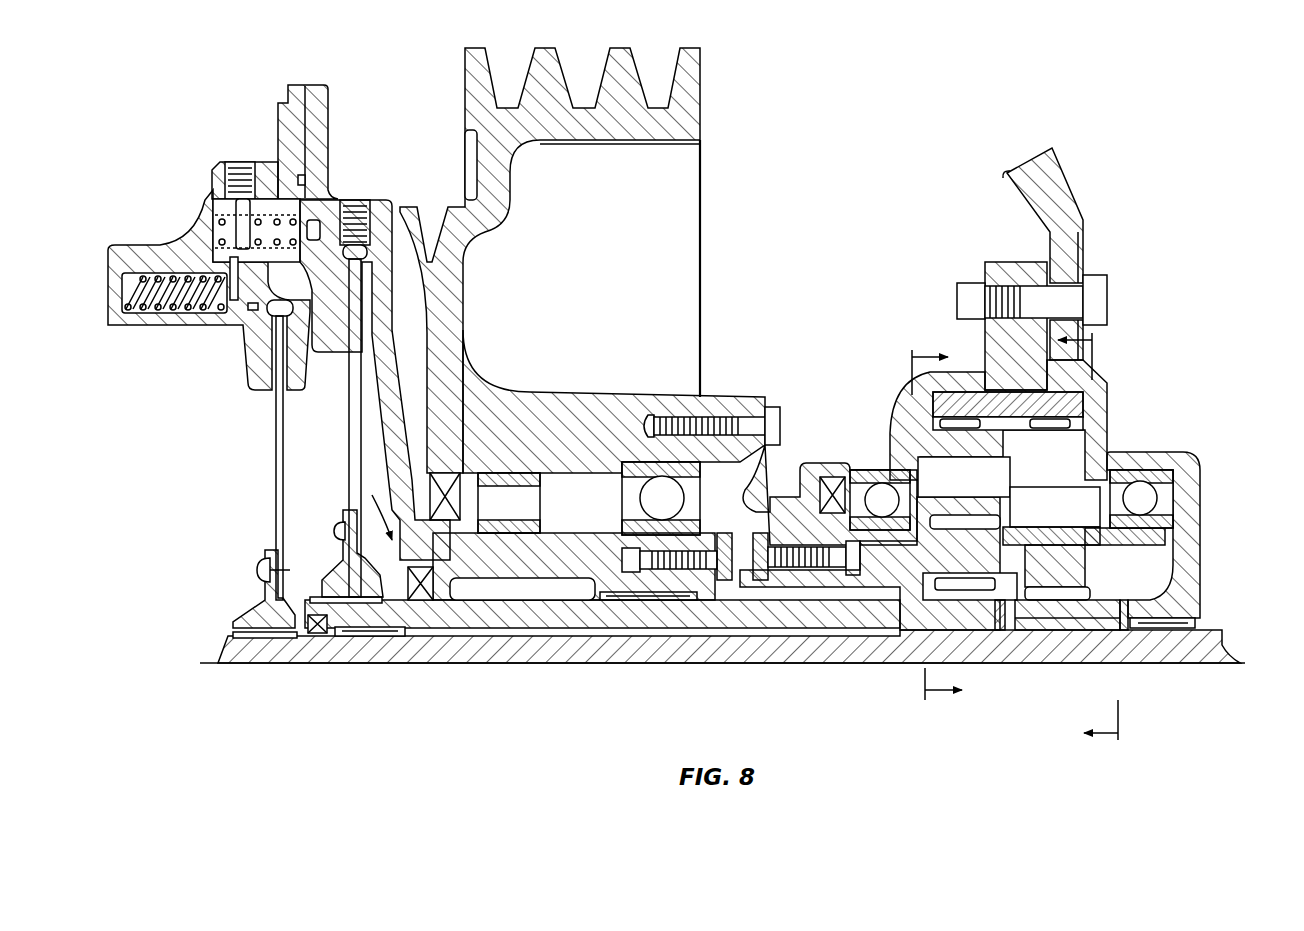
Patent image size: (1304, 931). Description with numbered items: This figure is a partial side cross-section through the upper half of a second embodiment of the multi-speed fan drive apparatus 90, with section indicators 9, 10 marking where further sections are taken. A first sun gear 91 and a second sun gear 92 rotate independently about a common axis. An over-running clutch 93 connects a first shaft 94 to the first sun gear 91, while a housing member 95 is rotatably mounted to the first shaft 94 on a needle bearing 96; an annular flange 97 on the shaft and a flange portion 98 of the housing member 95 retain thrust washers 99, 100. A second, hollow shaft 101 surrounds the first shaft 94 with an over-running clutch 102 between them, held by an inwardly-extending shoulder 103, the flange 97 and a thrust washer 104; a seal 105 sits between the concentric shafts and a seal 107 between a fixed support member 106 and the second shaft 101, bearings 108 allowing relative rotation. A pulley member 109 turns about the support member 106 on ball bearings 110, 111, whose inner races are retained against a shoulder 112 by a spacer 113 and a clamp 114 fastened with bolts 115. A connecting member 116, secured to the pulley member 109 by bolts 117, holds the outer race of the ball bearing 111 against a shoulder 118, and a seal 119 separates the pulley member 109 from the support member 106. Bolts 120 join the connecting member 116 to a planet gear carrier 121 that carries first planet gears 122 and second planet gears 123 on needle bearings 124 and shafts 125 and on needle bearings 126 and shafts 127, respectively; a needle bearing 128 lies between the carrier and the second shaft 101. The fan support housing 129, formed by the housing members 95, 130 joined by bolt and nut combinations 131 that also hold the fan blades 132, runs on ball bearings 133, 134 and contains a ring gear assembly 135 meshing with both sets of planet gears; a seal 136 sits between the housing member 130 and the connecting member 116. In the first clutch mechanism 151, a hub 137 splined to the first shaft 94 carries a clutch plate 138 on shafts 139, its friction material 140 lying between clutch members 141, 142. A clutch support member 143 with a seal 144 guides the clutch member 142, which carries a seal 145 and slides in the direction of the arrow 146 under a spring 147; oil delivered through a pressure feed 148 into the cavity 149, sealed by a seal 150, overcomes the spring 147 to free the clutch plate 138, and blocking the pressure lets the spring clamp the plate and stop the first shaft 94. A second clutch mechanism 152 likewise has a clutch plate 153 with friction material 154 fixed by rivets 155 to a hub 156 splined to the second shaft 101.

The multi-speed fan drive apparatus 90 is at (798, 262).
The first sun gear 91 is at (1048, 614).
The second sun gear 92 is at (950, 550).
The over-running clutch 93 is at (1060, 634).
The first shaft 94 is at (1145, 640).
The housing member 95 is at (1185, 468).
The needle bearing 96 is at (1180, 630).
The annular flange 97 is at (995, 613).
The flange portion 98 is at (1160, 608).
The thrust washer 99 is at (1040, 640).
The thrust washer 100 is at (1075, 614).
The second hollow shaft 101 is at (565, 618).
The over-running clutch 102 is at (975, 633).
The inwardly-extending shoulder 103 is at (900, 604).
The thrust washer 104 is at (993, 628).
The seal 105 is at (320, 637).
The support member 106 is at (535, 565).
The seal 107 is at (420, 592).
The bearings 108 is at (365, 634).
The pulley member 109 is at (690, 122).
The ball bearing 110 is at (512, 495).
The ball bearing 111 is at (658, 492).
The shoulder 112 is at (574, 566).
The spacer 113 is at (577, 545).
The clamp 114 is at (703, 590).
The bolts 115 is at (760, 590).
The connecting member 116 is at (770, 490).
The bolts 117 is at (776, 420).
The shoulder 118 is at (616, 466).
The seal 119 is at (445, 490).
The bolts 120 is at (766, 582).
The planet gear carrier 121 is at (868, 596).
The first planet gears 122 is at (1075, 455).
The second planet gears 123 is at (918, 440).
The needle bearings 124 is at (1085, 470).
The shafts 125 is at (1075, 500).
The needle bearings 126 is at (1008, 396).
The shafts 127 is at (882, 448).
The needle bearing 128 is at (806, 594).
The fan support housing 129 is at (1203, 258).
The housing member 130 is at (996, 350).
The bolt and nut combinations 131 is at (968, 292).
The fan blades 132 is at (1060, 182).
The ball bearing 133 is at (870, 488).
The ball bearing 134 is at (1152, 500).
The ring gear assembly 135 is at (1088, 398).
The seal 136 is at (832, 488).
The hub 137 is at (262, 608).
The clutch plate 138 is at (276, 508).
The shafts 139 is at (256, 570).
The friction material 140 is at (292, 355).
The clutch member 141 is at (296, 388).
The clutch member 142 is at (258, 355).
The clutch support member 143 is at (120, 255).
The seal 144 is at (324, 172).
The seal 145 is at (220, 190).
The arrow 146 is at (225, 418).
The spring 147 is at (165, 315).
The pressure feed 148 is at (240, 176).
The cavity 149 is at (232, 257).
The seal 150 is at (252, 312).
The first clutch mechanism 151 is at (232, 455).
The second clutch mechanism 152 is at (396, 538).
The clutch plate 153 is at (349, 449).
The friction material 154 is at (372, 262).
The rivets 155 is at (340, 528).
The hub 156 is at (345, 572).
The section line 9 is at (1098, 542).
The section line 10 is at (927, 514).